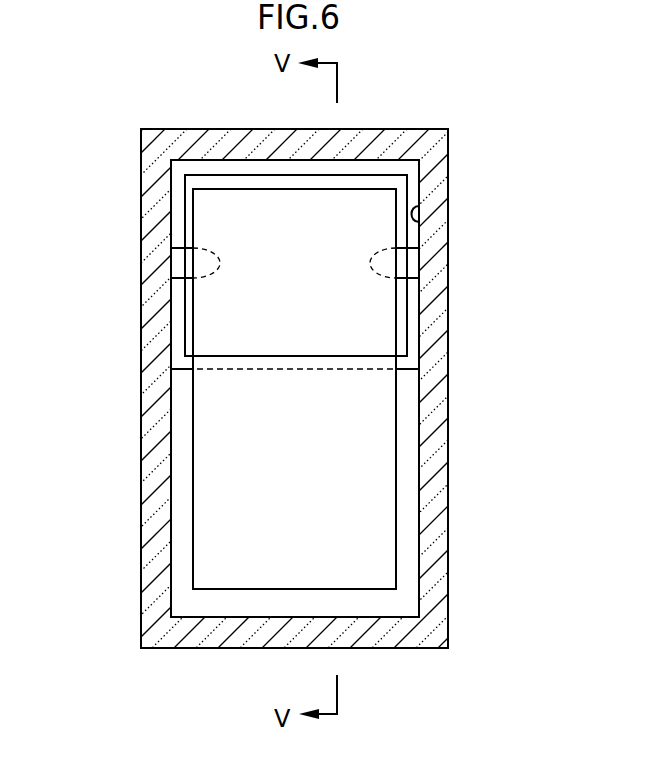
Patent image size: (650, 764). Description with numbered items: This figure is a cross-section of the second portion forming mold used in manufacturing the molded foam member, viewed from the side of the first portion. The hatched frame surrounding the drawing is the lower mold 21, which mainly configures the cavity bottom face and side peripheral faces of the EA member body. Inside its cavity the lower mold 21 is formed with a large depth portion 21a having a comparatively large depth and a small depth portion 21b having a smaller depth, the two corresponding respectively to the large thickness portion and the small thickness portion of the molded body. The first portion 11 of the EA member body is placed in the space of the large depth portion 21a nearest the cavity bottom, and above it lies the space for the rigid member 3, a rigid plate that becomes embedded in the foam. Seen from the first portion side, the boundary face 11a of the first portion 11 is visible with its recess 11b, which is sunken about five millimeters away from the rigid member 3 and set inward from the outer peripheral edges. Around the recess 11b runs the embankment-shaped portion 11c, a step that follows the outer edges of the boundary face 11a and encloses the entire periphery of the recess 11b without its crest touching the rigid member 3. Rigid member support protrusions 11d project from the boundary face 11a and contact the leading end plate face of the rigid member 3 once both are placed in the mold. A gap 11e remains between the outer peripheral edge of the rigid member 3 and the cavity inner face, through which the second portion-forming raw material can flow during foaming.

The rigid member 3 is at (368, 488).
The first portion 11 is at (387, 129).
The boundary face 11a is at (176, 319).
The recess 11b is at (297, 320).
The embankment-shaped portion 11c is at (177, 198).
The rigid member support protrusions 11d is at (182, 263).
The gap 11e is at (217, 168).
The lower mold 21 is at (185, 648).
The large depth portion 21a is at (418, 208).
The small depth portion 21b is at (190, 517).